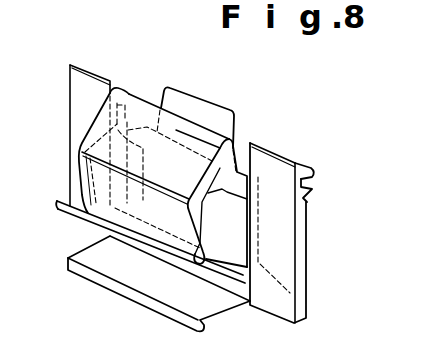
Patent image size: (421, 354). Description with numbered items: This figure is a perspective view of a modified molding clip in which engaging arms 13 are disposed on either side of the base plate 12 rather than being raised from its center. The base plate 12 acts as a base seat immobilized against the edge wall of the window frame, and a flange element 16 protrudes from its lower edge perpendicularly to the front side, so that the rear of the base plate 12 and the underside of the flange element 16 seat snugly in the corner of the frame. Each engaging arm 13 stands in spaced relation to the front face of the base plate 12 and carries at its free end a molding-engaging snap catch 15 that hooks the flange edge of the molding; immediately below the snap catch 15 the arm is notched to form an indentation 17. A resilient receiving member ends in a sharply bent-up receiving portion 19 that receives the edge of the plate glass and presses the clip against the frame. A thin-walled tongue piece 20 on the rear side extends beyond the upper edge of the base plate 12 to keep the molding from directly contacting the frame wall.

The base plate 12 is at (233, 223).
The engaging arm 13 is at (75, 133).
The molding-engaging snap catch 15 is at (299, 165).
The flange element 16 is at (217, 312).
The indentation 17 is at (304, 189).
The receiving portion 19 is at (78, 223).
The tongue piece 20 is at (224, 118).